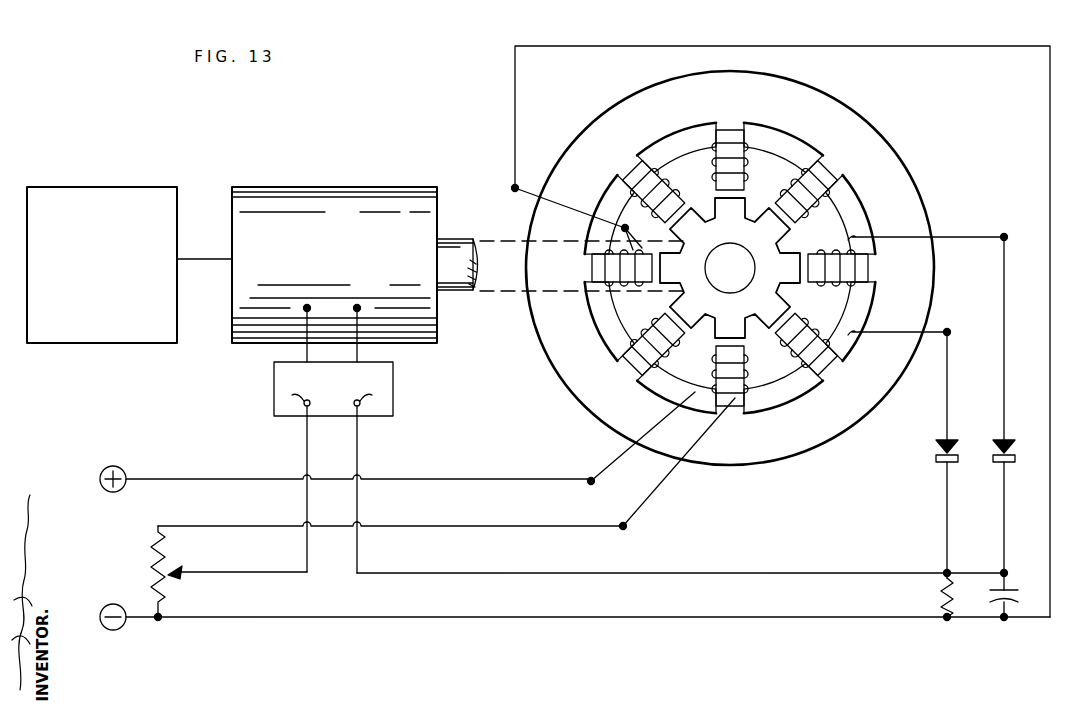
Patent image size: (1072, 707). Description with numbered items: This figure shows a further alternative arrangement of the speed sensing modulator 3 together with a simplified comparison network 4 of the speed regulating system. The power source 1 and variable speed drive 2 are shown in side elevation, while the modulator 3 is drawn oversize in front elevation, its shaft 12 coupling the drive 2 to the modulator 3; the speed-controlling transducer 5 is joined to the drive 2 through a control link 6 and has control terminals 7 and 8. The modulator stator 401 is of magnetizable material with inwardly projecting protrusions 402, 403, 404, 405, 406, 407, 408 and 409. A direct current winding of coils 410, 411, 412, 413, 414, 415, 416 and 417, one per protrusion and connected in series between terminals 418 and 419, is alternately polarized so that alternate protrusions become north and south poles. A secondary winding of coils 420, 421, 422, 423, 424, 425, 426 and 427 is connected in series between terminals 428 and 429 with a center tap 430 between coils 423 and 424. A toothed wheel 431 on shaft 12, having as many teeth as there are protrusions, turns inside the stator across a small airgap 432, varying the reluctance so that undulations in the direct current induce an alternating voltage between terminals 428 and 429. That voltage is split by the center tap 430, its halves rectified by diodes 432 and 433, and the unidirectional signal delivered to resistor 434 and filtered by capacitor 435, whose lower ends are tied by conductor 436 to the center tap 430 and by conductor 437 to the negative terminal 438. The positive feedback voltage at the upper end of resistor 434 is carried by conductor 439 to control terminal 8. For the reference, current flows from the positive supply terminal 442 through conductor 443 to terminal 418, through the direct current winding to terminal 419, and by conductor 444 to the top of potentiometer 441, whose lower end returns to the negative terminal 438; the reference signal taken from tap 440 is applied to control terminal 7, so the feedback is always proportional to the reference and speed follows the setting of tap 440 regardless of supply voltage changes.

The power source 1 is at (91, 256).
The variable speed drive 2 is at (323, 256).
The speed-sensing modulator 3 is at (764, 338).
The comparison network 4 is at (405, 576).
The speed-controlling transducer 5 is at (326, 387).
The control link 6 is at (357, 334).
The transducer control terminal 7 is at (300, 477).
The transducer control terminal 8 is at (365, 474).
The shaft 12 is at (466, 291).
The modulator stator 401 is at (676, 92).
The protrusion 402 is at (622, 362).
The protrusion 403 is at (592, 272).
The protrusion 404 is at (630, 172).
The protrusion 405 is at (724, 130).
The protrusion 406 is at (829, 170).
The protrusion 407 is at (872, 264).
The protrusion 408 is at (826, 366).
The protrusion 409 is at (721, 418).
The direct current coil 410 is at (612, 352).
The direct current coil 411 is at (590, 238).
The direct current coil 412 is at (660, 148).
The direct current coil 413 is at (780, 146).
The direct current coil 414 is at (852, 186).
The direct current coil 415 is at (852, 288).
The direct current coil 416 is at (820, 376).
The direct current coil 417 is at (696, 400).
The terminal 418 is at (589, 479).
The terminal 419 is at (621, 525).
The alternating current coil 420 is at (775, 345).
The alternating current coil 421 is at (716, 352).
The alternating current coil 422 is at (656, 324).
The alternating current coil 423 is at (636, 255).
The alternating current coil 424 is at (664, 188).
The alternating current coil 425 is at (749, 173).
The alternating current coil 426 is at (822, 204).
The alternating current coil 427 is at (824, 278).
The terminal 428 is at (921, 469).
The terminal 429 is at (932, 409).
The center tap 430 is at (610, 206).
The toothed wheel 431 is at (718, 240).
The airgap 432 is at (950, 442).
The diode 433 is at (1010, 448).
The resistor 434 is at (936, 600).
The capacitor 435 is at (1010, 588).
The conductor 436 is at (1050, 322).
The conductor 437 is at (560, 620).
The negative terminal 438 is at (124, 622).
The conductor 439 is at (638, 572).
The potentiometer tap 440 is at (180, 570).
The potentiometer 441 is at (152, 556).
The positive supply terminal 442 is at (127, 476).
The conductor 443 is at (442, 478).
The conductor 444 is at (430, 524).